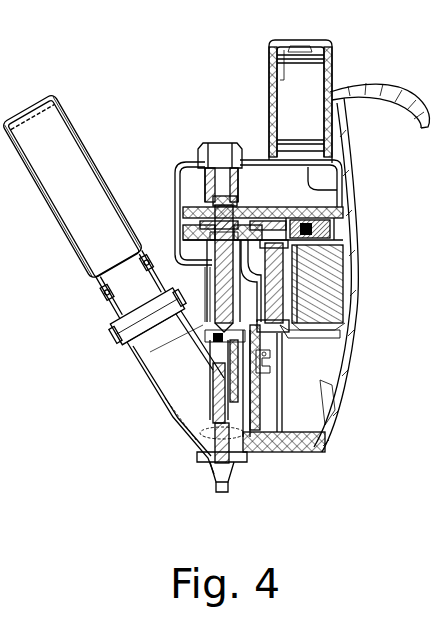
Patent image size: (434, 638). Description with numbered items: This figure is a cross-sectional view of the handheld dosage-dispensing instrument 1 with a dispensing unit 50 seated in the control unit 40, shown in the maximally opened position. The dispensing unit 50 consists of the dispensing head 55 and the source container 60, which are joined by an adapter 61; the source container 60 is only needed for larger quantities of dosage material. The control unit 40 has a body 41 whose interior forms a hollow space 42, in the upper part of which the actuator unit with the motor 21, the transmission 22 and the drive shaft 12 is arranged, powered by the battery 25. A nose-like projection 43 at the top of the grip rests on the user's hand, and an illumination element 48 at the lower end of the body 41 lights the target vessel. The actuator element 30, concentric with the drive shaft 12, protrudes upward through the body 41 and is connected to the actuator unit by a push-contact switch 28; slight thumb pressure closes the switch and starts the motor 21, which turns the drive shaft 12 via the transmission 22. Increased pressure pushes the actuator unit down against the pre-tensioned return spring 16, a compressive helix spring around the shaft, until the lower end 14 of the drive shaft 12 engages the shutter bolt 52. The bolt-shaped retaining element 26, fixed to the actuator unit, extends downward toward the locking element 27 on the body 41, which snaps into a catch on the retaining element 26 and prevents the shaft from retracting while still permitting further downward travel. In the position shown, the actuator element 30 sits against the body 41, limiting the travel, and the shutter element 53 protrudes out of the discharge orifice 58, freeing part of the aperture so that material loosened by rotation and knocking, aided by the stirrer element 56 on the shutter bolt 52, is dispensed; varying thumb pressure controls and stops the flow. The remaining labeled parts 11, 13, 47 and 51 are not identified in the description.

The handheld dosage-dispensing instrument 1 is at (1, 382).
The needle 11 is at (240, 371).
The drive shaft 12 is at (226, 245).
The plunger stopper 13 is at (221, 262).
The lower end of the drive shaft 14 is at (222, 327).
The return spring 16 is at (215, 257).
The motor 21 is at (317, 257).
The transmission 22 is at (312, 223).
The battery 25 is at (302, 83).
The bolt-shaped retaining element 26 is at (278, 283).
The locking element 27 is at (281, 315).
The push-contact switch 28 is at (226, 198).
The actuator element 30 is at (222, 142).
The control unit 40 is at (352, 400).
The body 41 is at (335, 340).
The hollow space 42 is at (312, 333).
The nose-like projection 43 is at (383, 96).
The latch 47 is at (267, 378).
The illumination element 48 is at (241, 377).
The dispensing unit 50 is at (160, 433).
The flange 51 is at (117, 327).
The shutter bolt 52 is at (223, 442).
The shutter element 53 is at (218, 488).
The dispensing head 55 is at (173, 365).
The stirrer element 56 is at (236, 435).
The discharge orifice 58 is at (220, 487).
The source container 60 is at (92, 202).
The adapter 61 is at (100, 295).